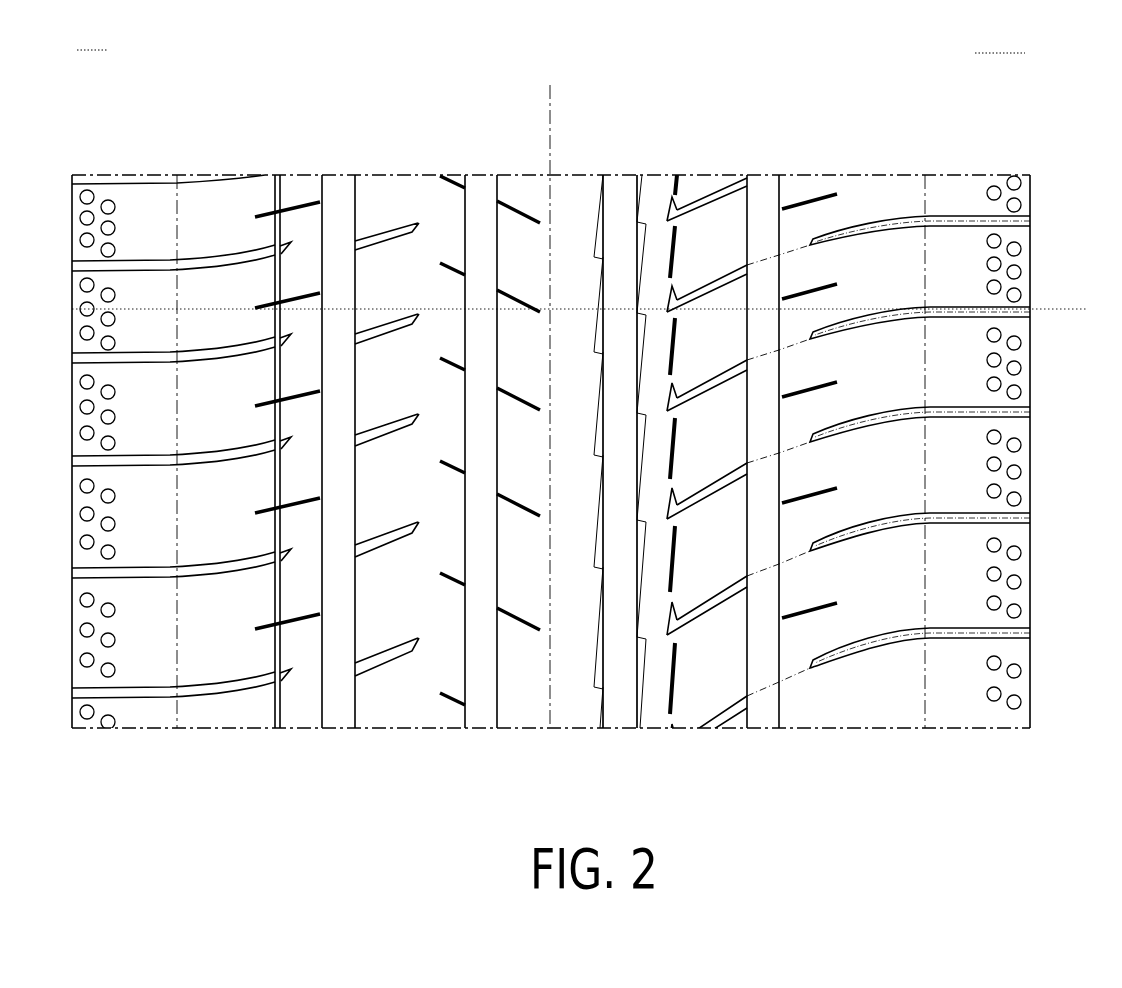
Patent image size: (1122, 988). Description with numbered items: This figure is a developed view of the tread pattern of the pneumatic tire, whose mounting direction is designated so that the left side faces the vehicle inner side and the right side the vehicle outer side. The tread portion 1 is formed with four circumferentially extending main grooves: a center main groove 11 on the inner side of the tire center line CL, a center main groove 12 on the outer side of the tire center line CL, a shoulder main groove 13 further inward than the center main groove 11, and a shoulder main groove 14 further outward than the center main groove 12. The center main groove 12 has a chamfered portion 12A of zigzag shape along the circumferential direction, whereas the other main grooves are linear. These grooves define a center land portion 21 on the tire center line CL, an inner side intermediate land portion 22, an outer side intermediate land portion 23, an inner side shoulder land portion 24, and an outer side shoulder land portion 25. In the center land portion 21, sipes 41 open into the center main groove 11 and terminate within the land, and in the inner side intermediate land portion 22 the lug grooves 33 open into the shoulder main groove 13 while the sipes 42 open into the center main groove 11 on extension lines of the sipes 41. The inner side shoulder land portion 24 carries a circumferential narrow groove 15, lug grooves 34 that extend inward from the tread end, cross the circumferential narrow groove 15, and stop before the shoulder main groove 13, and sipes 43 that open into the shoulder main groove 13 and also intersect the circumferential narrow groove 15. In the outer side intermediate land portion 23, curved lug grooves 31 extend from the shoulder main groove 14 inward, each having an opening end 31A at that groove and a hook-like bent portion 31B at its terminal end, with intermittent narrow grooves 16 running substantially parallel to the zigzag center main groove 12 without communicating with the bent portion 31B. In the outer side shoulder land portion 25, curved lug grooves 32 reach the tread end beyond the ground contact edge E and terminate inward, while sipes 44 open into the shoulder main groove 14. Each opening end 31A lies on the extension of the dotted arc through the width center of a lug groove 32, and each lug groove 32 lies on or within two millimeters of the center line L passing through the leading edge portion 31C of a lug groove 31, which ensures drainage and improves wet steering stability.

The tread portion 1 is at (992, 168).
The center main groove 11 is at (484, 200).
The center main groove 12 is at (608, 454).
The chamfered portion 12A is at (598, 693).
The shoulder main groove 13 is at (337, 200).
The shoulder main groove 14 is at (763, 200).
The circumferential narrow groove 15 is at (277, 200).
The narrow grooves 16 is at (673, 703).
The center land portion 21 is at (545, 454).
The inner side intermediate land portion 22 is at (412, 454).
The outer side intermediate land portion 23 is at (861, 454).
The inner side shoulder land portion 24 is at (196, 454).
The outer side shoulder land portion 25 is at (906, 454).
The lug grooves 31 is at (730, 600).
The opening end 31A is at (1062, 578).
The bent portion 31B is at (662, 618).
The leading edge portion 31C is at (1057, 377).
The lug grooves 32 is at (948, 642).
The lug grooves 33 is at (392, 655).
The lug grooves 34 is at (217, 570).
The sipes 41 is at (525, 622).
The sipes 42 is at (455, 580).
The sipes 43 is at (300, 620).
The sipes 44 is at (815, 610).
The ground contact edge E is at (925, 170).
The tire center line CL is at (548, 387).
The center line L is at (592, 313).